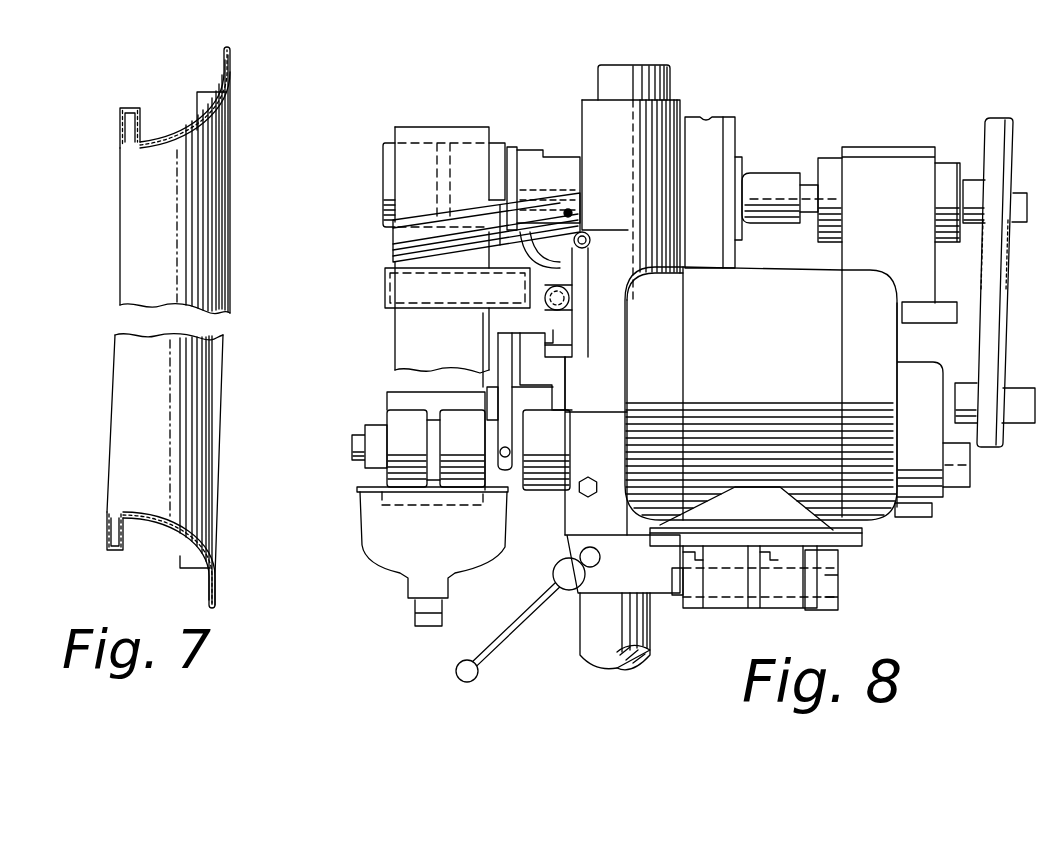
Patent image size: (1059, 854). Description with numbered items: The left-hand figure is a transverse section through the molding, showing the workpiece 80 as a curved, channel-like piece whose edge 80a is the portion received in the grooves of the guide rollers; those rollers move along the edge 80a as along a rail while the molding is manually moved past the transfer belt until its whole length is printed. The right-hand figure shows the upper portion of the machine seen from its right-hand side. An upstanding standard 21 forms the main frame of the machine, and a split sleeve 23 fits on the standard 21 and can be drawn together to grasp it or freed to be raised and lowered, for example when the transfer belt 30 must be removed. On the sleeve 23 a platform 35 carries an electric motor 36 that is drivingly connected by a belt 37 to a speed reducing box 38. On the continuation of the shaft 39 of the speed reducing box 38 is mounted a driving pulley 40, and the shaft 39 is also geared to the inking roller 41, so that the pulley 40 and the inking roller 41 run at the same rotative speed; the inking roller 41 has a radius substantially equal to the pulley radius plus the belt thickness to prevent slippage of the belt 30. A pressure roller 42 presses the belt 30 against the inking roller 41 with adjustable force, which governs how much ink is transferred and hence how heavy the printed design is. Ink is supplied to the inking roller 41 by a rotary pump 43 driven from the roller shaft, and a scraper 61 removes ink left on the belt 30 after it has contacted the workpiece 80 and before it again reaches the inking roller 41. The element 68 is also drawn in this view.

In FIG. 7, the workpiece 80 is at (130, 249).
In FIG. 7, the edge of the workpiece 80a is at (222, 46).
In FIG. 8, the standard 21 is at (670, 83).
In FIG. 8, the sleeve 23 is at (680, 115).
In FIG. 8, the transfer belt 30 is at (470, 110).
In FIG. 8, the platform 35 is at (838, 550).
In FIG. 8, the electric motor 36 is at (870, 524).
In FIG. 8, the belt 37 is at (992, 320).
In FIG. 8, the speed reducing box 38 is at (880, 165).
In FIG. 8, the shaft 39 is at (510, 182).
In FIG. 8, the driving pulley 40 is at (383, 207).
In FIG. 8, the inking roller 41 is at (390, 396).
In FIG. 8, the pressure roller 42 is at (385, 457).
In FIG. 8, the rotary pump 43 is at (368, 528).
In FIG. 8, the scraper 61 is at (395, 232).
In FIG. 8, the bar 68 is at (398, 292).